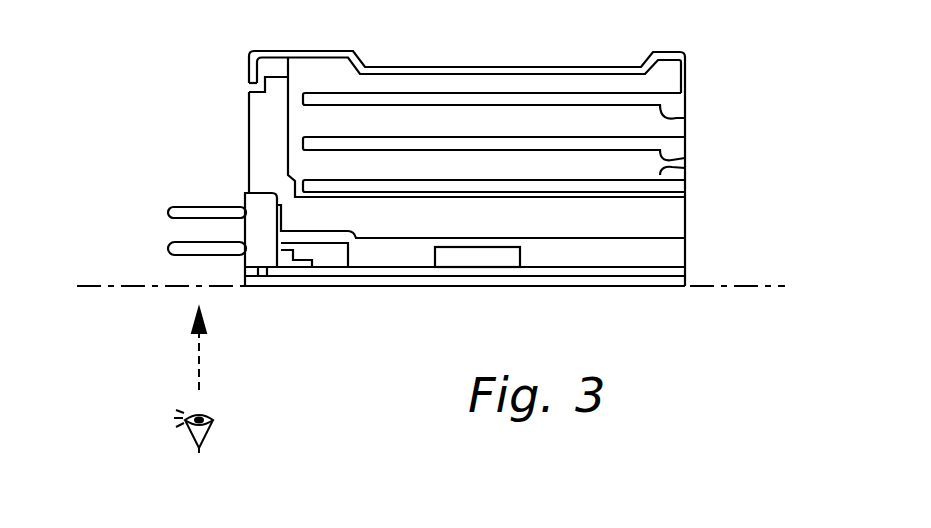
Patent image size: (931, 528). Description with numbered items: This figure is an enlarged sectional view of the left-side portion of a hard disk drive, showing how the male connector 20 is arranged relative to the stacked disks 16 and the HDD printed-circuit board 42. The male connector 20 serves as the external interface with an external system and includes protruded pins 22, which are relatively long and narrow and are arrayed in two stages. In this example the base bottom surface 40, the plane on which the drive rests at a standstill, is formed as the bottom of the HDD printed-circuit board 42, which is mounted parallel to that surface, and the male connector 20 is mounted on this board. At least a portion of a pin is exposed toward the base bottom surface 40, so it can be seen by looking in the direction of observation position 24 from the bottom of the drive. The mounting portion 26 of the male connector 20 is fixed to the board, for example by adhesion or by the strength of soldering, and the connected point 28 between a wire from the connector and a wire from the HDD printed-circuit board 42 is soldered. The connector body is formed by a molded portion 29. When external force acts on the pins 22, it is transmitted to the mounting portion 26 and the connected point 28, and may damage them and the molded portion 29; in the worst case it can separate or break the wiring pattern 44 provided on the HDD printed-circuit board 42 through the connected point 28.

The stacked disks 16 is at (683, 122).
The male connector 20 is at (158, 226).
The pins 22 is at (168, 246).
The direction of observation position 24 is at (214, 380).
The mounting portion 26 is at (267, 276).
The connected point 28 is at (306, 266).
The molded portion 29 is at (255, 205).
The base bottom surface 40 is at (429, 287).
The HDD printed-circuit board 42 is at (626, 286).
The wiring pattern 44 is at (657, 267).